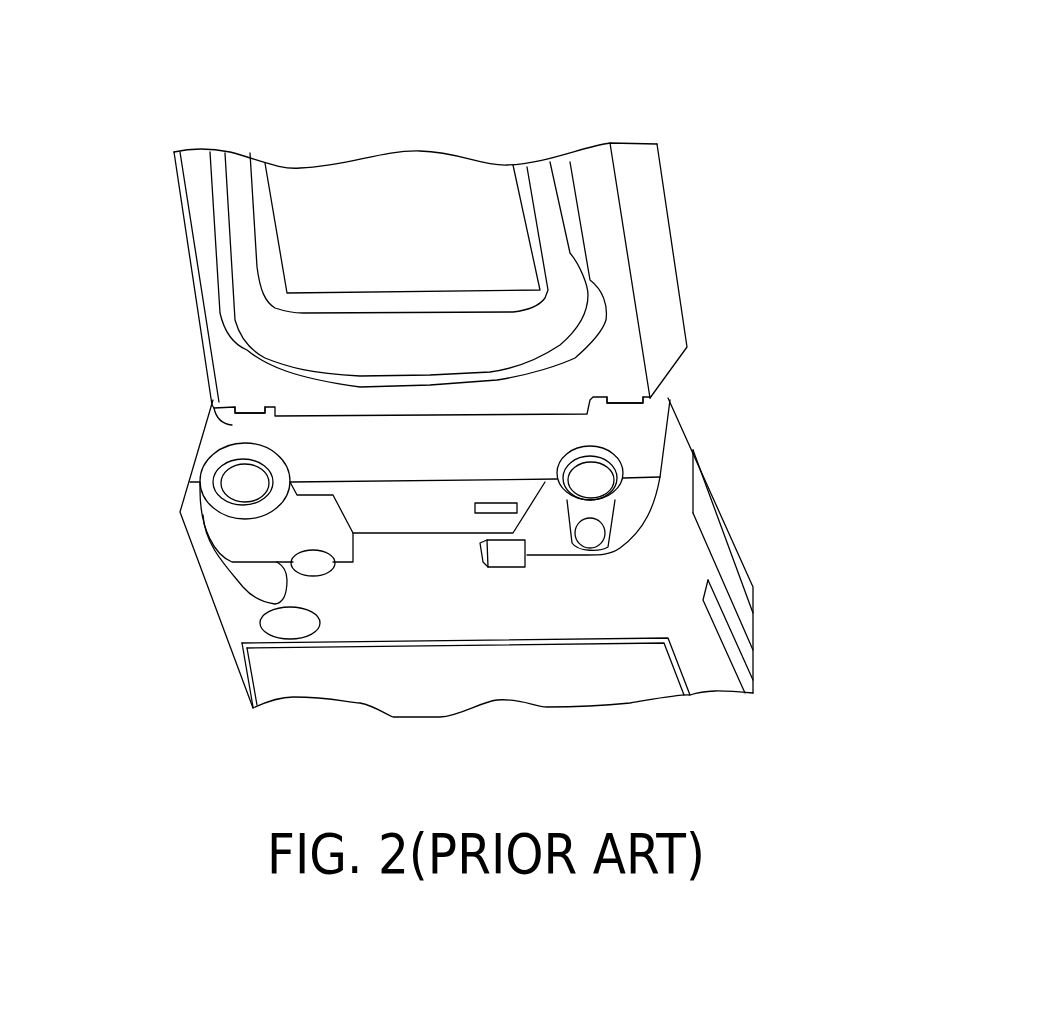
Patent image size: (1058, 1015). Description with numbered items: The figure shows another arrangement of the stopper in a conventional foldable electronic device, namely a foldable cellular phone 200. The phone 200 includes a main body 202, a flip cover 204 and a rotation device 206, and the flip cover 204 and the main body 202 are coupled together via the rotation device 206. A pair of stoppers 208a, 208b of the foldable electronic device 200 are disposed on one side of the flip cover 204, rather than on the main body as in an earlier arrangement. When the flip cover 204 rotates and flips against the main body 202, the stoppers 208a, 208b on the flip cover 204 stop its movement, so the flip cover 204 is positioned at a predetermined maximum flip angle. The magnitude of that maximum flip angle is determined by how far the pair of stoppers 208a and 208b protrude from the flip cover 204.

The foldable cellular phone 200 is at (733, 41).
The main body 202 is at (237, 627).
The flip cover 204 is at (240, 200).
The rotation device 206 is at (677, 463).
The stopper 208a is at (228, 412).
The stopper 208b is at (627, 400).